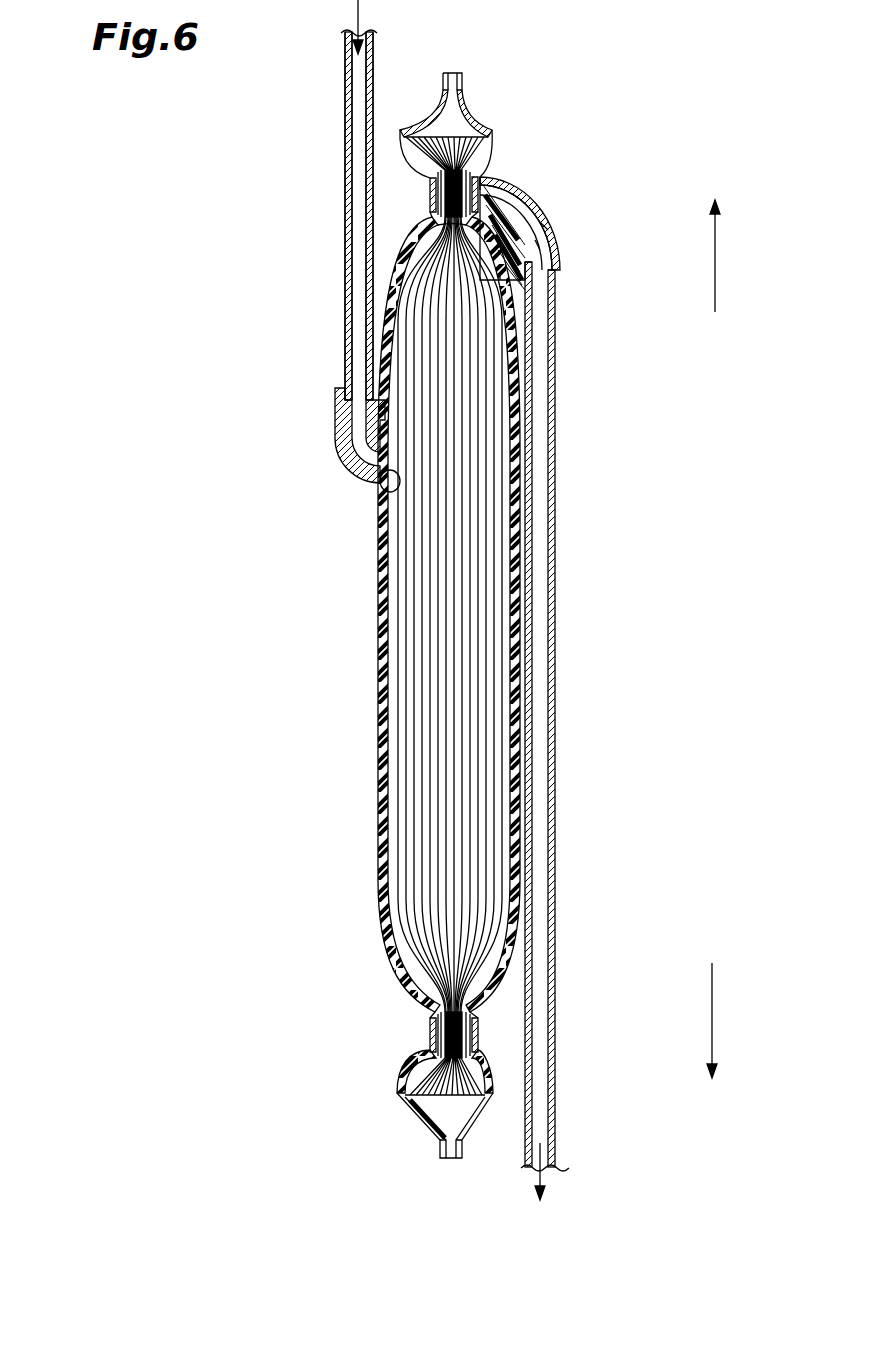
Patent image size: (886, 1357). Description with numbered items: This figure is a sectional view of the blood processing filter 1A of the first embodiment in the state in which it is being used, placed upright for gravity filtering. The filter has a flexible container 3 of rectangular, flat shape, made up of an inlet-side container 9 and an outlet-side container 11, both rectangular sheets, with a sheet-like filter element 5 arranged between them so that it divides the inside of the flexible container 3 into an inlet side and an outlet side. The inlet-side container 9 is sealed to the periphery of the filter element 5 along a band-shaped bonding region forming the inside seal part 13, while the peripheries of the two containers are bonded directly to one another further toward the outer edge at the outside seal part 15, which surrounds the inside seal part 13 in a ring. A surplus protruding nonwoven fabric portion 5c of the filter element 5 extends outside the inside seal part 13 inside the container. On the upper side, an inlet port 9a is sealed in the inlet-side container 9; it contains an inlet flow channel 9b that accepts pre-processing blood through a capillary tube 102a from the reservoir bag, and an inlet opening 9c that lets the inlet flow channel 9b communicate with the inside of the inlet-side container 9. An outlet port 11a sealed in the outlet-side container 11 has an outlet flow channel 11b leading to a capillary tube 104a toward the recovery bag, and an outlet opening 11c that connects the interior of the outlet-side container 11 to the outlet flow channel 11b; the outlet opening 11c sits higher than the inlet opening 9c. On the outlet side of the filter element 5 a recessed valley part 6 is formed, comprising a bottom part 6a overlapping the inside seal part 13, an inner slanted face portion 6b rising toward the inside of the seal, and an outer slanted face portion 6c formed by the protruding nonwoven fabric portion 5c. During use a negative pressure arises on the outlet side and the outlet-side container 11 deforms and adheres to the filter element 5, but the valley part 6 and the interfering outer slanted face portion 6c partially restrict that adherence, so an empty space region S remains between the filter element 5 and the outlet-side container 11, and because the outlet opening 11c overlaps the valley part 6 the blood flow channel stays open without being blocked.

The blood processing filter 1A is at (622, 98).
The flexible container 3 is at (462, 96).
The valley part 6 is at (463, 176).
The inside seal part 13 is at (430, 200).
The filter element 5 is at (386, 529).
The inlet-side container 9 is at (376, 590).
The inlet port 9a is at (340, 425).
The inlet flow channel 9b is at (365, 455).
The inlet opening 9c is at (380, 488).
The capillary tube 102a is at (345, 185).
The empty space region S is at (455, 226).
The outlet-side container 11 is at (525, 455).
The outlet port 11a is at (546, 220).
The outlet flow channel 11b is at (540, 238).
The outlet opening 11c is at (470, 184).
The capillary tube 104a is at (556, 760).
The bottom part 6a is at (466, 1036).
The inner slanted face portion 6b is at (466, 1013).
The outer slanted face portion 6c is at (469, 1058).
The protruding nonwoven fabric portion 5c is at (430, 1096).
The outside seal part 15 is at (440, 1148).